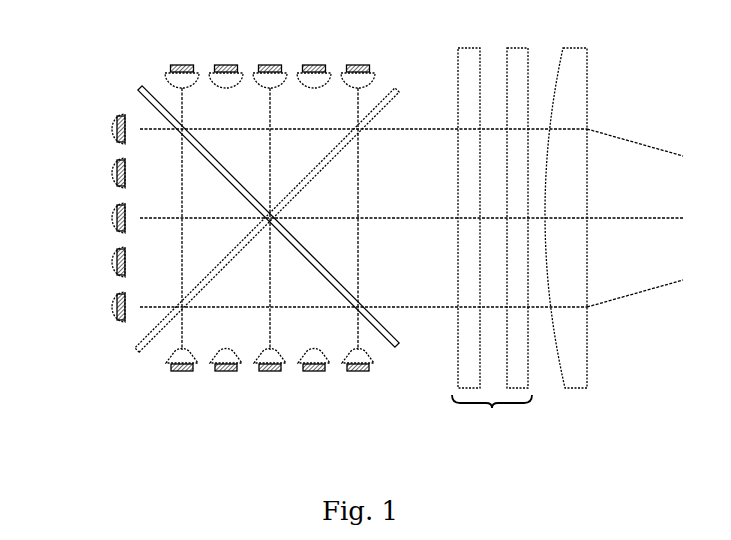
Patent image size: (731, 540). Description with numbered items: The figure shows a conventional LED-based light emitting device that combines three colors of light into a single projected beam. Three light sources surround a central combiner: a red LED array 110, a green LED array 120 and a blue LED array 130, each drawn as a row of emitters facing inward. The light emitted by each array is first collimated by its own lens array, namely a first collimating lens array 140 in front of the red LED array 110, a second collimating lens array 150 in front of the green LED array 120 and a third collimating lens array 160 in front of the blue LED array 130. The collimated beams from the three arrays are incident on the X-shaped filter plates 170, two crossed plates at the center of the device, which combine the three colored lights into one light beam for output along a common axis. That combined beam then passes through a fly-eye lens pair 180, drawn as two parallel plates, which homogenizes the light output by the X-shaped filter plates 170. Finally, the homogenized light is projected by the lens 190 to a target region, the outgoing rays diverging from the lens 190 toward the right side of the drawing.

The red LED array 110 is at (181, 71).
The green LED array 120 is at (119, 217).
The blue LED array 130 is at (232, 370).
The first collimating lens array 140 is at (372, 78).
The second collimating lens array 150 is at (130, 121).
The third collimating lens array 160 is at (175, 357).
The X-shaped filter plates 170 is at (143, 92).
The fly-eye lens pair 180 is at (492, 246).
The lens 190 is at (568, 75).